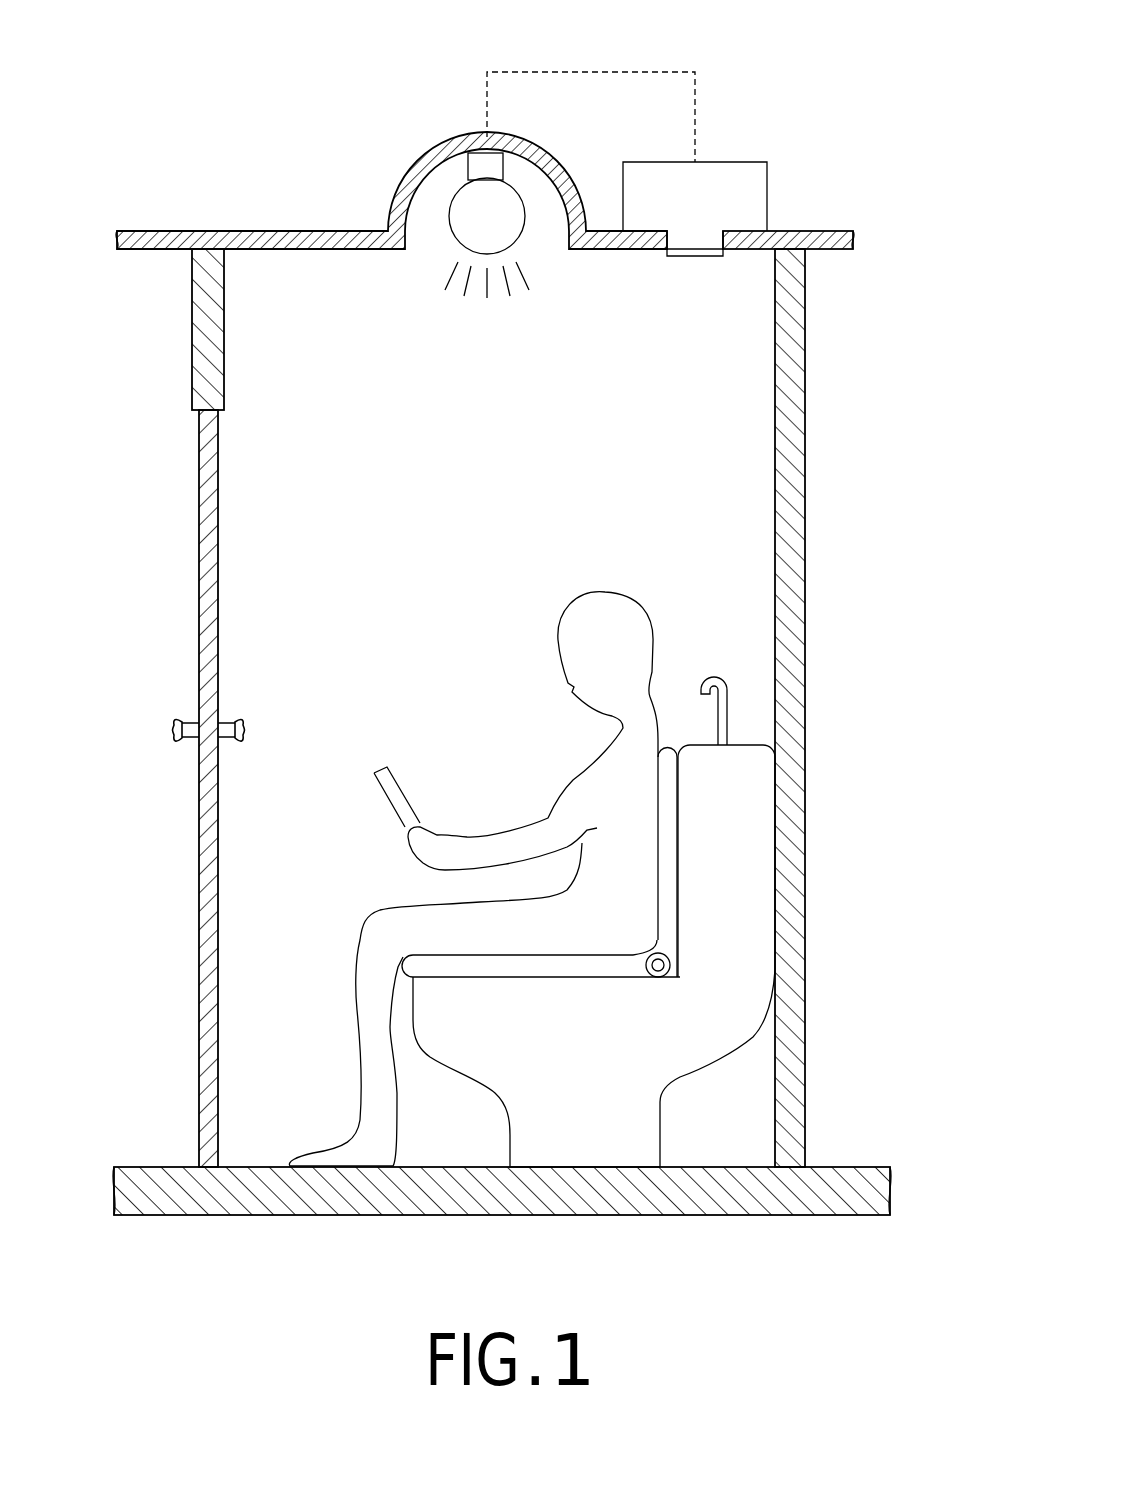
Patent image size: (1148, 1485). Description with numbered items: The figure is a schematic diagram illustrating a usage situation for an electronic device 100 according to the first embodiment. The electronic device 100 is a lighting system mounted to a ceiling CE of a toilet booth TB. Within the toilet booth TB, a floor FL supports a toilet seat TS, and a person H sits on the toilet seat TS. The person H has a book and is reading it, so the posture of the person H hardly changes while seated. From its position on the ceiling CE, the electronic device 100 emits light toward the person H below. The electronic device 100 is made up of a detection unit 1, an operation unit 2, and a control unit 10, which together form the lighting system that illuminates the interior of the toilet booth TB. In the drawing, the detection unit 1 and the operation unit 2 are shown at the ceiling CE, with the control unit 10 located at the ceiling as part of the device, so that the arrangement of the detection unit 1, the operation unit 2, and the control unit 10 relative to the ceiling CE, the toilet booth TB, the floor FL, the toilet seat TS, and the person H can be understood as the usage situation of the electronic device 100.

The electronic device 100 is at (649, 168).
The control unit 10 is at (750, 170).
The detection unit 1 is at (697, 257).
The operation unit 2 is at (467, 219).
The ceiling CE is at (278, 233).
The toilet booth TB is at (198, 323).
The floor FL is at (590, 1196).
The toilet seat TS is at (648, 1106).
The person H is at (634, 584).